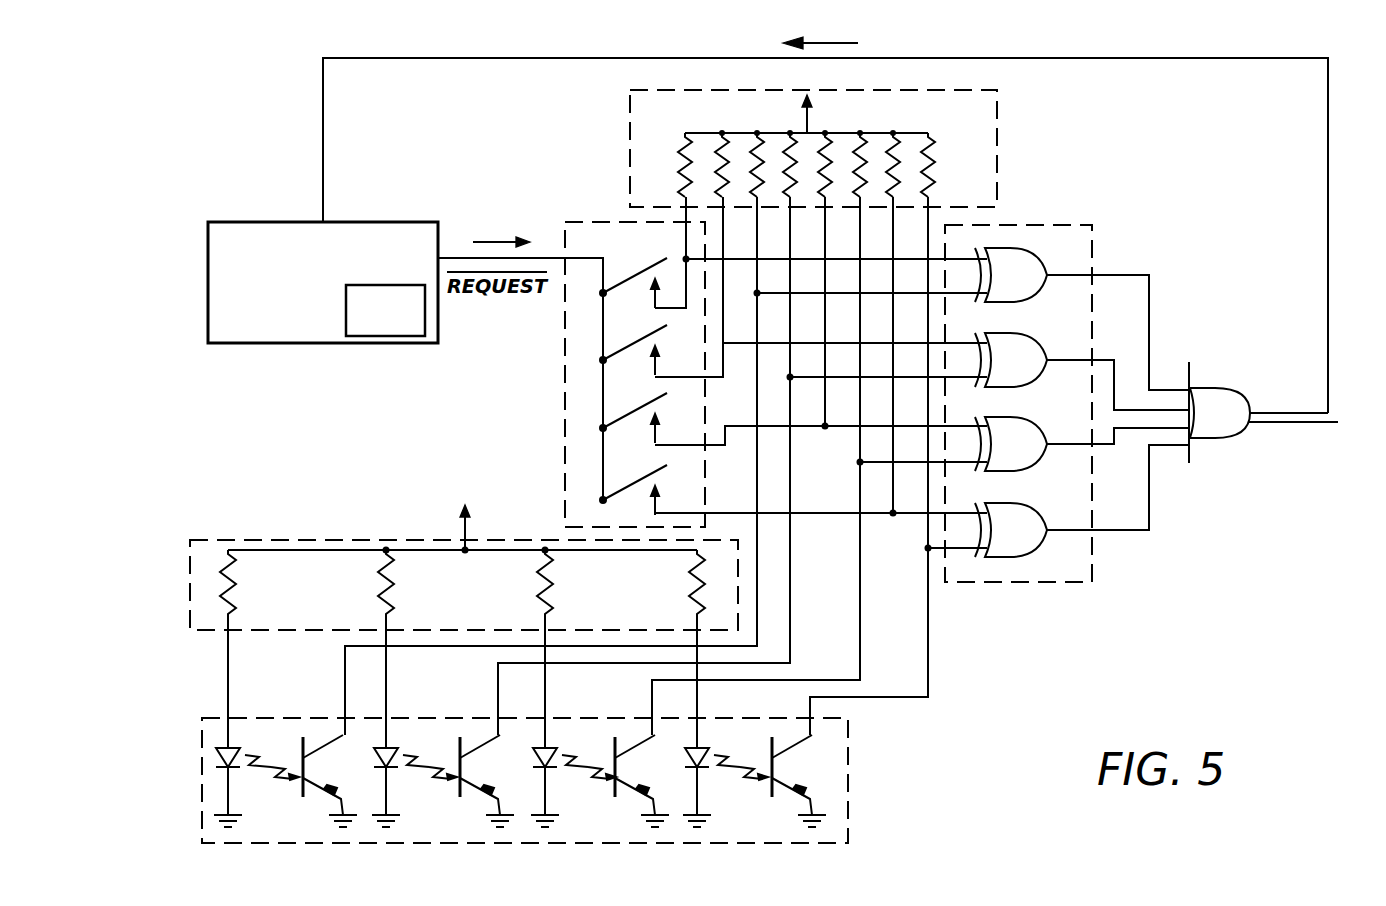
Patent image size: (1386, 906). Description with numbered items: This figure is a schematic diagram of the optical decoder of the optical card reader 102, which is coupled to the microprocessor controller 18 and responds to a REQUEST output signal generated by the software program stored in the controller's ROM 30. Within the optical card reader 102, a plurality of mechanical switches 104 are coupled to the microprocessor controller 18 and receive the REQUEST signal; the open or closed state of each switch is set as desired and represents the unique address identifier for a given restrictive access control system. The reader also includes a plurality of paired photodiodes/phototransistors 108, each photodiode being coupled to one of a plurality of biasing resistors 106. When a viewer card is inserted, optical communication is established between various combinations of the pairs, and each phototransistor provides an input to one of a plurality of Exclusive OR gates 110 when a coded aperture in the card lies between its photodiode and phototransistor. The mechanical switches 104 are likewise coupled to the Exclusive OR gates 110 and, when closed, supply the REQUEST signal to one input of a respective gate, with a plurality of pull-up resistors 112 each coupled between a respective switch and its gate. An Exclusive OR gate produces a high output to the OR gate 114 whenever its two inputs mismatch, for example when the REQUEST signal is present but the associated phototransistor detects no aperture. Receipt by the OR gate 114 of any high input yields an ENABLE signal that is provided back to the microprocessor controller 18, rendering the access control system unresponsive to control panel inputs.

The microprocessor controller 18 is at (285, 324).
The ROM 30 is at (403, 330).
The optical card reader 102 is at (1232, 570).
The mechanical switches 104 is at (565, 397).
The biasing resistors 106 is at (190, 585).
The paired photodiodes/phototransistors 108 is at (202, 760).
The Exclusive OR gates 110 is at (1067, 225).
The pull-up resistors 112 is at (997, 148).
The OR gate 114 is at (1228, 421).